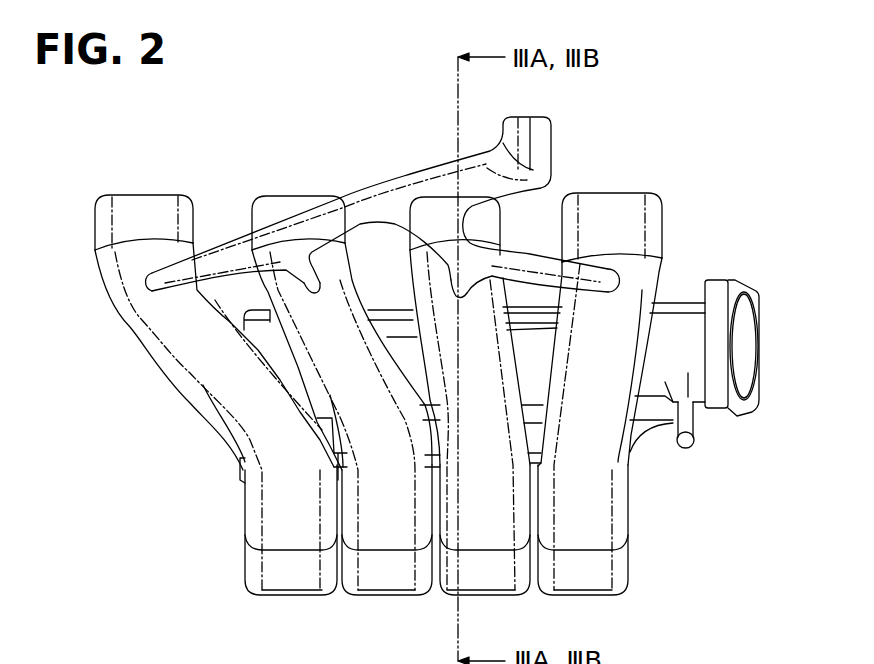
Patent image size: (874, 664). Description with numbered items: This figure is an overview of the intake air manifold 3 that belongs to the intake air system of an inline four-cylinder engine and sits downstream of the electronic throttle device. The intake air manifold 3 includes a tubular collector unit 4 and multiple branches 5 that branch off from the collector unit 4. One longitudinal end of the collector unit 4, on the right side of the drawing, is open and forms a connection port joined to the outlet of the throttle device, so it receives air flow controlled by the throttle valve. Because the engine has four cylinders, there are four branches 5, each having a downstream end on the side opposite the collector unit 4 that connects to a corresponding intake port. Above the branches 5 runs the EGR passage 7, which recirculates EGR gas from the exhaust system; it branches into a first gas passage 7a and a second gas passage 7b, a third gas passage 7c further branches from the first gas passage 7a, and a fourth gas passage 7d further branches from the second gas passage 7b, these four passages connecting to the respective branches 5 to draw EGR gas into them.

The intake air manifold 3 is at (368, 133).
The collector unit 4 is at (675, 332).
The branches 5 is at (345, 356).
The EGR passage 7 is at (527, 137).
The first gas passage 7a is at (231, 262).
The second gas passage 7b is at (580, 273).
The third gas passage 7c is at (297, 262).
The fourth gas passage 7d is at (463, 277).